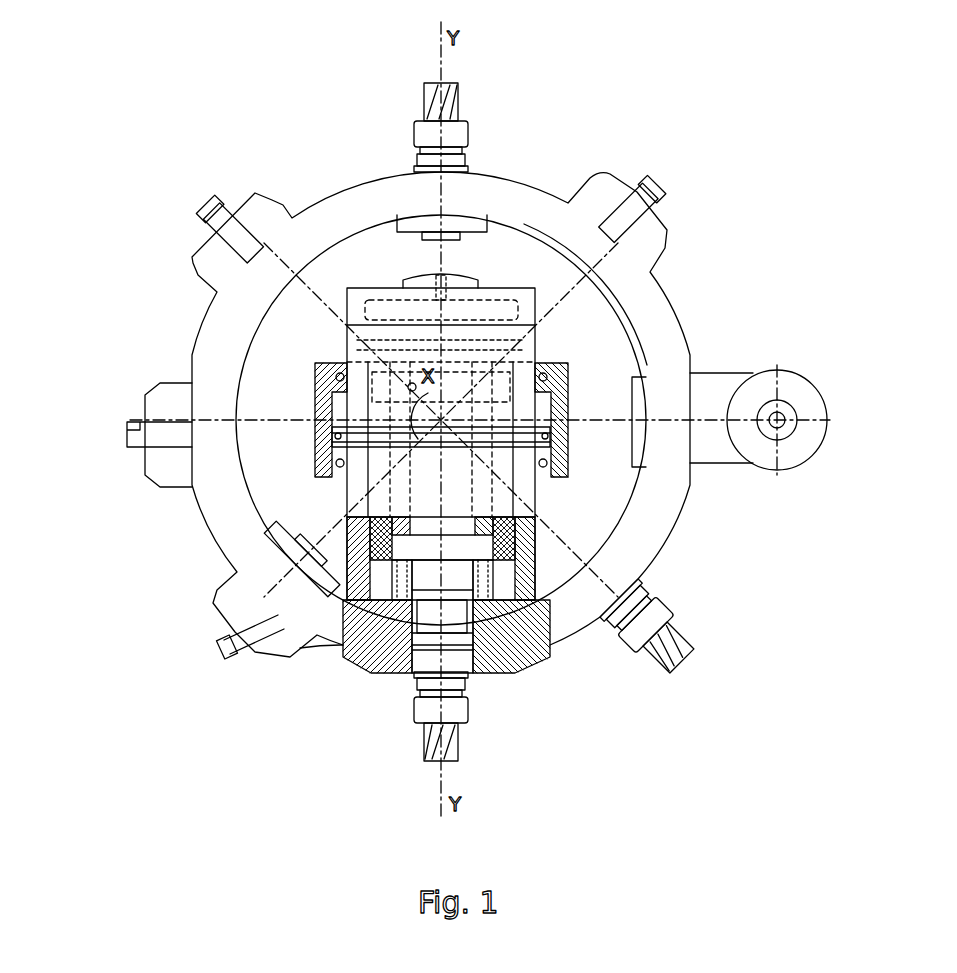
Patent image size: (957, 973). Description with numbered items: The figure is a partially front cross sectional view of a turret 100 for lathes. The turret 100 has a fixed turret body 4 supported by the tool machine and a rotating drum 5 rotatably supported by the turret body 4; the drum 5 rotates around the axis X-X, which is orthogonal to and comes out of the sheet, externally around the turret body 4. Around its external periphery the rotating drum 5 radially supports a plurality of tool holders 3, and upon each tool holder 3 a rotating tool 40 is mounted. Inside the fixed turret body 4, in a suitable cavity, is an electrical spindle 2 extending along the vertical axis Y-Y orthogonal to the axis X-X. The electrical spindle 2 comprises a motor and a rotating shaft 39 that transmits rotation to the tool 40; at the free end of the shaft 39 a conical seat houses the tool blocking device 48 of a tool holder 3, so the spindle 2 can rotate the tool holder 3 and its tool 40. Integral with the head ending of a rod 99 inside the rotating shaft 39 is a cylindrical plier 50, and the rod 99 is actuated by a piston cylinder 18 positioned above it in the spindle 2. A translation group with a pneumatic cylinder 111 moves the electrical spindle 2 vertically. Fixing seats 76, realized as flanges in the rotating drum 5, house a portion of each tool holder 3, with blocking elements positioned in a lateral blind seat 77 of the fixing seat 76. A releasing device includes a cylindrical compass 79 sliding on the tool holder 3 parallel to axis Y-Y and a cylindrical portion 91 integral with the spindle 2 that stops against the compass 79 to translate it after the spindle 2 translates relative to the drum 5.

The turret 100 is at (719, 277).
The rotating drum 5 is at (680, 323).
The pneumatic cylinder 111 is at (600, 397).
The electrical spindle 2 is at (548, 496).
The tool holder 3 is at (465, 160).
The rotating tool 40 is at (458, 88).
The piston cylinder 18 is at (545, 322).
The turret body 4 is at (500, 323).
The tool blocking device 48 is at (345, 522).
The rod 99 is at (313, 606).
The cylindrical compass 79 is at (337, 637).
The fixing seat 76 is at (307, 640).
The rotating shaft 39 is at (545, 598).
The cylindrical portion 91 is at (544, 605).
The lateral blind seat 77 is at (480, 673).
The cylindrical plier 50 is at (462, 727).